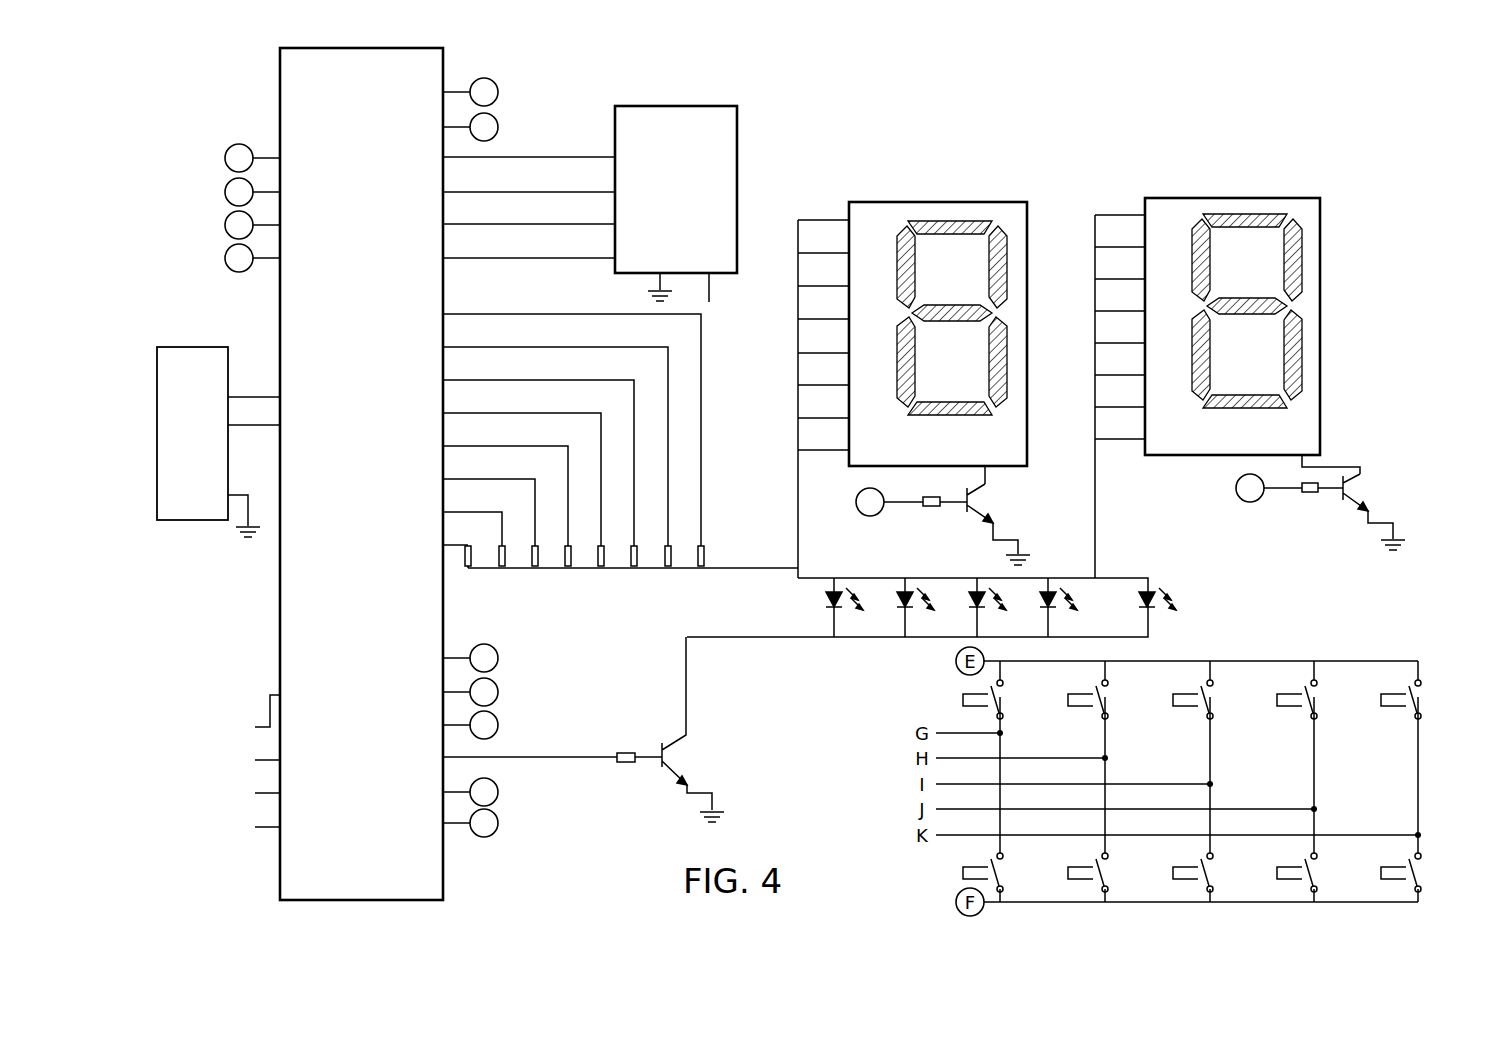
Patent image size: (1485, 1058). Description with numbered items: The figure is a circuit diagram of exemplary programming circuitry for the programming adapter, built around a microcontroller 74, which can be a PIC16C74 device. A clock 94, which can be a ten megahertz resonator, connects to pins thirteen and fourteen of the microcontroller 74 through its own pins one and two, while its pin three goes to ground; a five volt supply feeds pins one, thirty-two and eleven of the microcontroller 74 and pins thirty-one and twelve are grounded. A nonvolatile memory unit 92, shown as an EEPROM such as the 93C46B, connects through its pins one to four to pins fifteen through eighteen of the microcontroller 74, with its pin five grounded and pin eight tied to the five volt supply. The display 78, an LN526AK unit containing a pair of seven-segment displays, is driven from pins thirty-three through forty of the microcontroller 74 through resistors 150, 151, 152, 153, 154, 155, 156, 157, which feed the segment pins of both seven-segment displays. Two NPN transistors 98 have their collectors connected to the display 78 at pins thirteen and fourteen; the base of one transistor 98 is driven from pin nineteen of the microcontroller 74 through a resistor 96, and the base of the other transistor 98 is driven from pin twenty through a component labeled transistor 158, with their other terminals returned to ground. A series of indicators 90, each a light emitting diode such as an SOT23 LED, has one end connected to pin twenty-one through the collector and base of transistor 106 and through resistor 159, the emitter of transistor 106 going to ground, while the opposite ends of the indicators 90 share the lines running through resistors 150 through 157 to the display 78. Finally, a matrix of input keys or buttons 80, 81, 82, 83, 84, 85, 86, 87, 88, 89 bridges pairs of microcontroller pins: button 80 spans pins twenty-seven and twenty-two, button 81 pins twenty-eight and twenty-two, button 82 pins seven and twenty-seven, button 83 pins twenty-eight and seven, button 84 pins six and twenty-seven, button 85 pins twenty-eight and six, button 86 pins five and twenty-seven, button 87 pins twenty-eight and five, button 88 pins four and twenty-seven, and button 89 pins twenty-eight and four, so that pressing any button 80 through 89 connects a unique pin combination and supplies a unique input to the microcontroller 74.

The microcontroller 74 is at (280, 88).
The clock 94 is at (193, 346).
The nonvolatile memory unit 92 is at (738, 150).
The display 78 is at (1338, 192).
The transistors 98 is at (987, 502).
The resistor 96 is at (931, 507).
The transistor 158 is at (1310, 493).
The resistor 159 is at (626, 763).
The transistor 106 is at (683, 758).
The indicators 90 is at (818, 607).
The resistor 150 is at (464, 569).
The resistor 151 is at (500, 568).
The resistor 152 is at (531, 569).
The resistor 153 is at (566, 568).
The resistor 154 is at (597, 569).
The resistor 155 is at (632, 568).
The resistor 156 is at (664, 569).
The resistor 157 is at (699, 568).
The button 80 is at (1008, 870).
The button 81 is at (1008, 697).
The button 82 is at (1113, 870).
The button 83 is at (1113, 697).
The button 84 is at (1218, 870).
The button 85 is at (1218, 697).
The button 86 is at (1322, 870).
The button 87 is at (1322, 697).
The button 88 is at (1426, 870).
The button 89 is at (1426, 697).